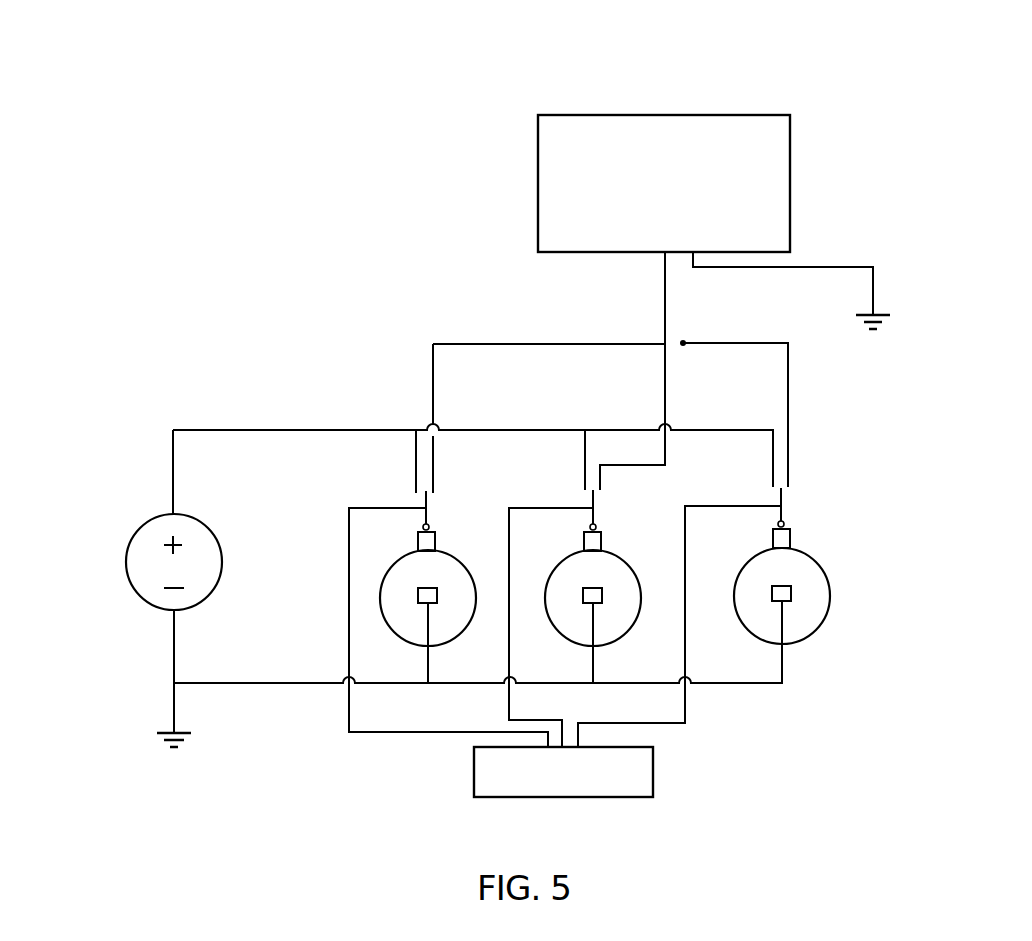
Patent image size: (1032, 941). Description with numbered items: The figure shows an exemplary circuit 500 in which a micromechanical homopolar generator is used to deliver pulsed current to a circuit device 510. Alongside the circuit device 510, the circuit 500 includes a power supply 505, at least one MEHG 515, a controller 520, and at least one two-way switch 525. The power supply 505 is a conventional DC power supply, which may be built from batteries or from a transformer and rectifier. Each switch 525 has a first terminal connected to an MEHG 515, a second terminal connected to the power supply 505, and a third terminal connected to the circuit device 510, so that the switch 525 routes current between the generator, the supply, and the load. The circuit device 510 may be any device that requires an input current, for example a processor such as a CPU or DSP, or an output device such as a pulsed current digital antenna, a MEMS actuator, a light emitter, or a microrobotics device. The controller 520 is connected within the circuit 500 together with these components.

The circuit 500 is at (276, 134).
The power supply 505 is at (151, 535).
The circuit device 510 is at (733, 113).
The MEHG 515 is at (408, 620).
The controller 520 is at (658, 759).
The two-way switch 525 is at (430, 515).